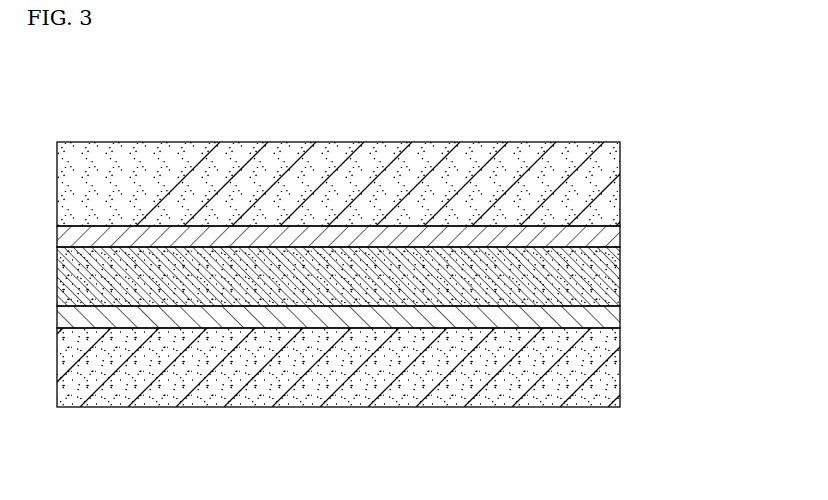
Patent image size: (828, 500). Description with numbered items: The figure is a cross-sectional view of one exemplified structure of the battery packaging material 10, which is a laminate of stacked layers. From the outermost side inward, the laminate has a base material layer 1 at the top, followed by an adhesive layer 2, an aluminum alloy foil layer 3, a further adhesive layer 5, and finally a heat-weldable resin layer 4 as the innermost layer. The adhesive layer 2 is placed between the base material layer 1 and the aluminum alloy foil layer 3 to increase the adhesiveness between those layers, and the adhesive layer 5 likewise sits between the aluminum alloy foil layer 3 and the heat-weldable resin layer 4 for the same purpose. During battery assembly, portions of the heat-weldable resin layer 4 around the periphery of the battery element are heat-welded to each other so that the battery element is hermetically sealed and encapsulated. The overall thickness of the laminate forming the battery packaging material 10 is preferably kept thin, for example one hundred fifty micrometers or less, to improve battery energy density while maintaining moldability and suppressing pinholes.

The battery packaging material 10 is at (362, 110).
The base material layer 1 is at (620, 182).
The adhesive layer 2 is at (620, 238).
The aluminum alloy foil layer 3 is at (620, 285).
The adhesive layer 5 is at (620, 320).
The heat-weldable resin layer 4 is at (620, 363).